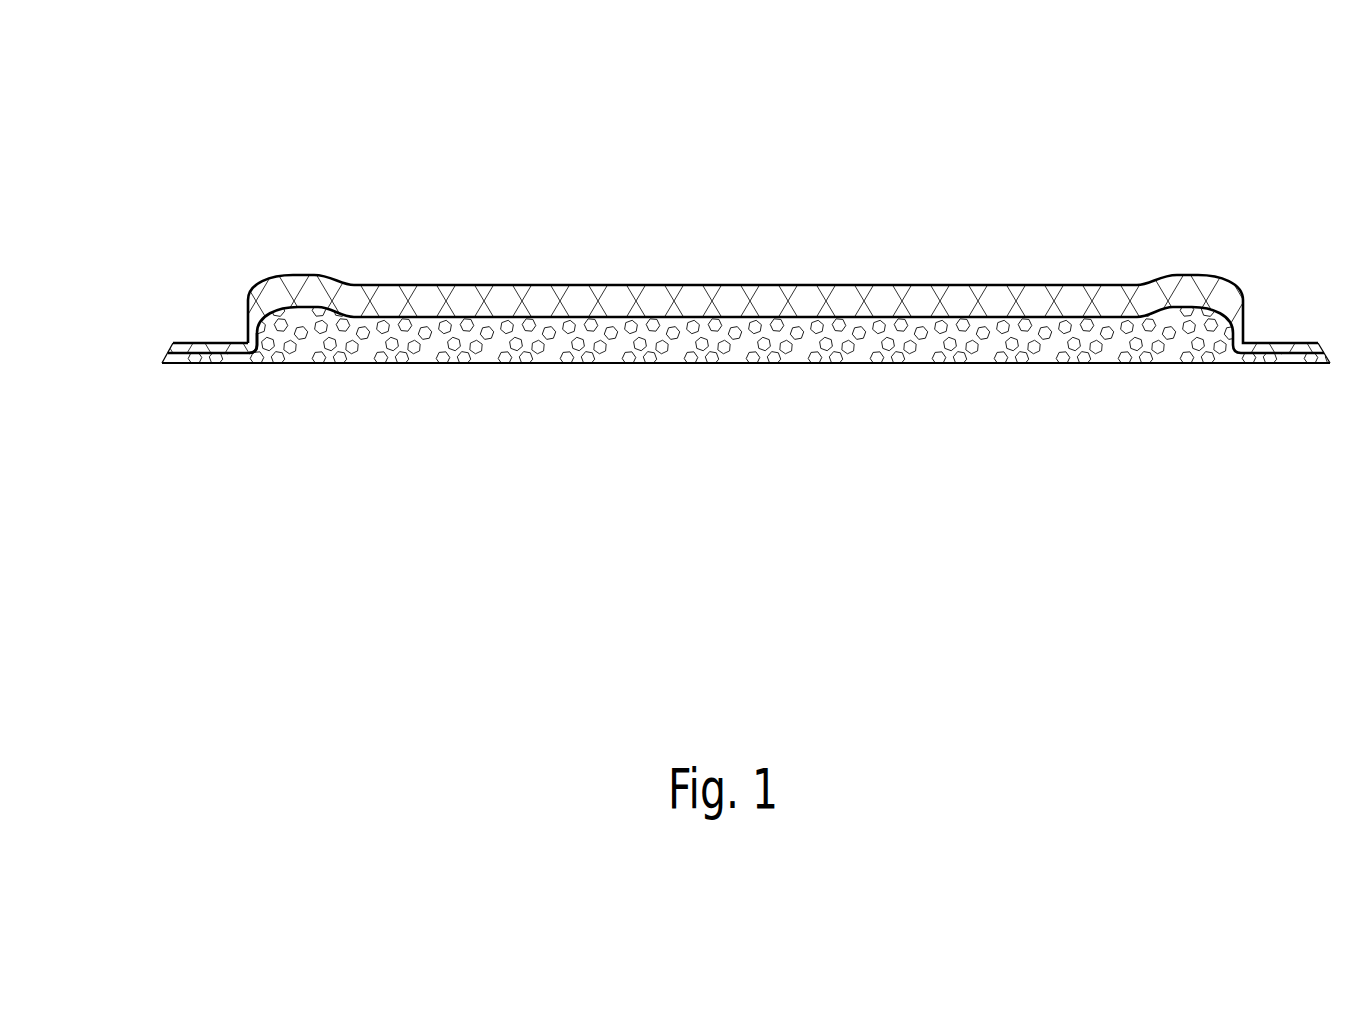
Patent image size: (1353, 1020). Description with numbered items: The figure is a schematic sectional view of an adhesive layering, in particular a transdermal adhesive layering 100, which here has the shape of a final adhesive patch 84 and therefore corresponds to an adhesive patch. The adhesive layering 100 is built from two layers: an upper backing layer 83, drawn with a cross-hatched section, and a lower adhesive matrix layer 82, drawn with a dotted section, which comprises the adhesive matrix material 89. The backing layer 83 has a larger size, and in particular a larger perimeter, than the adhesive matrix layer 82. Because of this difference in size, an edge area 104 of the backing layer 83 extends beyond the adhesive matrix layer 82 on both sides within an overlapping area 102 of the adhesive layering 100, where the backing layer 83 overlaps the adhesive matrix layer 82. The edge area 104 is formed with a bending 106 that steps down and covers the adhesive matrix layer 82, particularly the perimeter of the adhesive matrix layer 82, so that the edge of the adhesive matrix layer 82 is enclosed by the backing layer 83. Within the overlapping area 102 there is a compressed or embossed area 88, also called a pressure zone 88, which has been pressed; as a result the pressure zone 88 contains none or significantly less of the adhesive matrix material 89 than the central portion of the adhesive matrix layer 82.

The transdermal adhesive layering 100 is at (1065, 140).
The final adhesive patch 84 is at (1062, 223).
The backing layer 83 is at (472, 300).
The adhesive matrix material 89 is at (945, 348).
The adhesive matrix layer 82 is at (1218, 330).
The compressed or embossed area 88 is at (252, 357).
The bending 106 is at (253, 333).
The overlapping area 102 is at (207, 320).
The edge area 104 is at (190, 350).